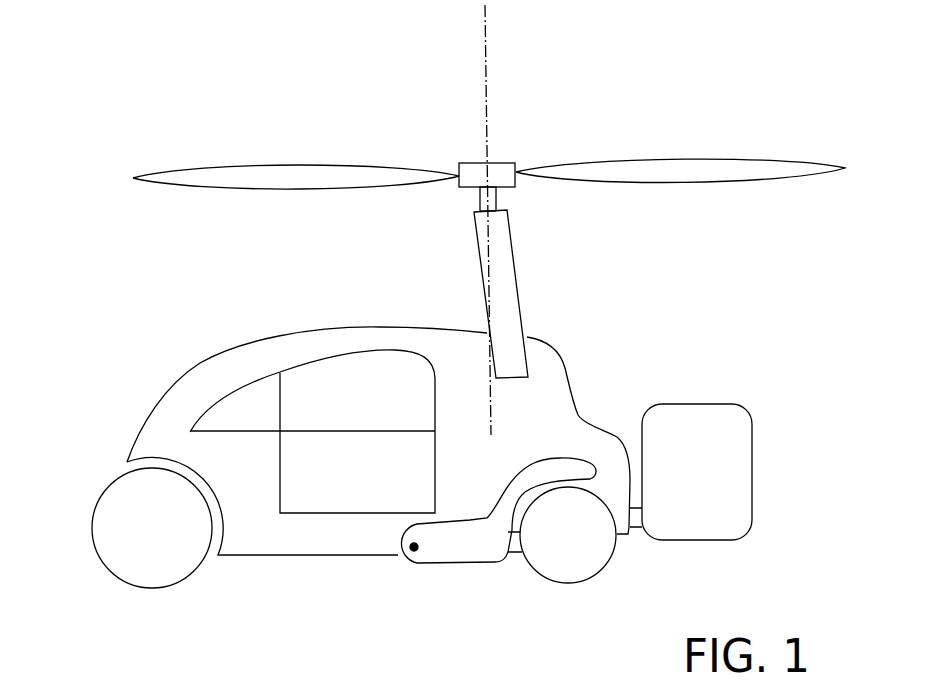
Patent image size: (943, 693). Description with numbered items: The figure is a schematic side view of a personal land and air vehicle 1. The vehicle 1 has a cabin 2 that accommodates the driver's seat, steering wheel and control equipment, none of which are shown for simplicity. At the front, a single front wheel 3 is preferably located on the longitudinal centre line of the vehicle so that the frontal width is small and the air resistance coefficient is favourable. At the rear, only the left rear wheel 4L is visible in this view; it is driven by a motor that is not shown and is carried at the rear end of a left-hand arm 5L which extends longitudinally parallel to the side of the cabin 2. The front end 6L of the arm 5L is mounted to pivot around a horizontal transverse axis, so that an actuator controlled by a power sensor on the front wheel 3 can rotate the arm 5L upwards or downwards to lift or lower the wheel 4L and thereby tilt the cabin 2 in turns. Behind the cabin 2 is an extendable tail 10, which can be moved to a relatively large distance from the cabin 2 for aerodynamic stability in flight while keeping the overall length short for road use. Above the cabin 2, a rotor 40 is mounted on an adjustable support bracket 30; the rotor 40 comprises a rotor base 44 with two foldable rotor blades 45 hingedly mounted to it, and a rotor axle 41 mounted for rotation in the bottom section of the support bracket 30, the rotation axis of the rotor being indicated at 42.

The vehicle 1 is at (90, 252).
The cabin 2 is at (213, 370).
The front wheel 3 is at (182, 582).
The rear wheel 4L is at (547, 580).
The arm 5L is at (458, 565).
The front end of the arm 6L is at (414, 547).
The extendable tail 10 is at (688, 405).
The adjustable support bracket 30 is at (514, 266).
The rotor 40 is at (572, 125).
The rotor axle 41 is at (478, 198).
The rotation axis of the rotor 42 is at (483, 32).
The rotor base 44 is at (469, 162).
The rotor blades 45 is at (317, 163).